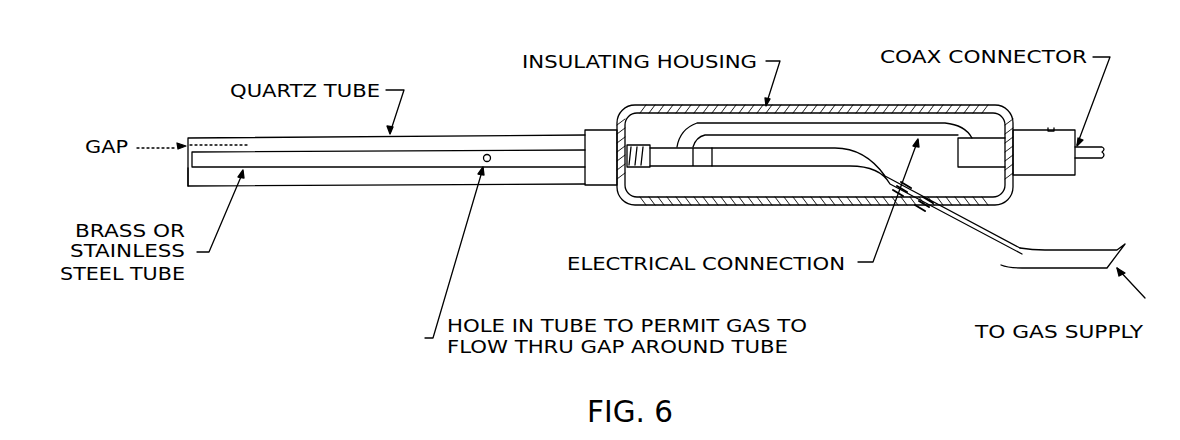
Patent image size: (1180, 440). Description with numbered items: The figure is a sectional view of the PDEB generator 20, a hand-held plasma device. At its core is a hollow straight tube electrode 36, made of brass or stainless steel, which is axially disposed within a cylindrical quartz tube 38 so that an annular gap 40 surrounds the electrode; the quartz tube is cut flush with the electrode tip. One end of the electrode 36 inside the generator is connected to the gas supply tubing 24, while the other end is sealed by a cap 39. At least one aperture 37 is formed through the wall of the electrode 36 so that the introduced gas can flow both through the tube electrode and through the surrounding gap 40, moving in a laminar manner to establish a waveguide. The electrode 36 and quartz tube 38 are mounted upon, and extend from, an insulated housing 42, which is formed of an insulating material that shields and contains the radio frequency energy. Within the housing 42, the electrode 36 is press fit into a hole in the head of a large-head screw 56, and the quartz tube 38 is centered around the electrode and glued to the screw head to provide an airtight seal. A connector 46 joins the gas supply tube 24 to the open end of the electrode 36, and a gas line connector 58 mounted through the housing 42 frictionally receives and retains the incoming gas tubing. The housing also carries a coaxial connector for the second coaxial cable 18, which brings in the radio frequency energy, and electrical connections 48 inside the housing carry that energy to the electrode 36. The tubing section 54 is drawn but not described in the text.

The second coaxial cable 18 is at (1101, 148).
The PDEB generator 20 is at (833, 47).
The gas supply tubing 24 is at (1055, 246).
The hollow straight tube electrode 36 is at (288, 160).
The aperture 37 is at (492, 148).
The quartz tube 38 is at (437, 135).
The cap 39 is at (186, 170).
The gap 40 is at (186, 152).
The insulated housing 42 is at (961, 104).
The connector 46 is at (703, 167).
The electrical connections 48 is at (866, 136).
The gas tube 54 is at (787, 167).
The screw 56 is at (592, 130).
The gas line connector 58 is at (915, 188).